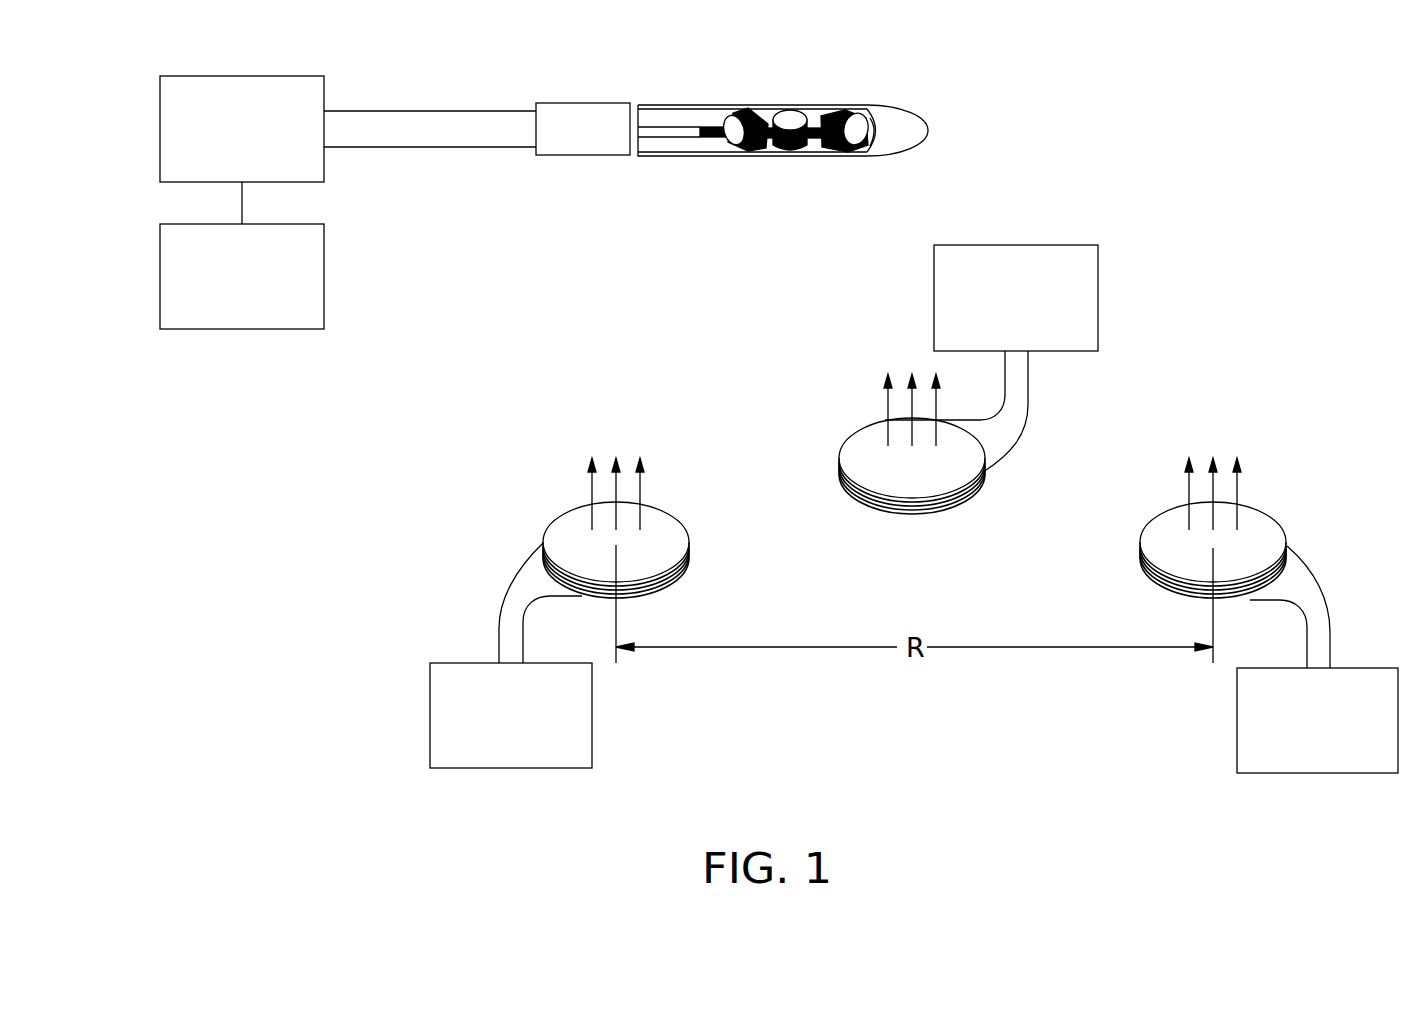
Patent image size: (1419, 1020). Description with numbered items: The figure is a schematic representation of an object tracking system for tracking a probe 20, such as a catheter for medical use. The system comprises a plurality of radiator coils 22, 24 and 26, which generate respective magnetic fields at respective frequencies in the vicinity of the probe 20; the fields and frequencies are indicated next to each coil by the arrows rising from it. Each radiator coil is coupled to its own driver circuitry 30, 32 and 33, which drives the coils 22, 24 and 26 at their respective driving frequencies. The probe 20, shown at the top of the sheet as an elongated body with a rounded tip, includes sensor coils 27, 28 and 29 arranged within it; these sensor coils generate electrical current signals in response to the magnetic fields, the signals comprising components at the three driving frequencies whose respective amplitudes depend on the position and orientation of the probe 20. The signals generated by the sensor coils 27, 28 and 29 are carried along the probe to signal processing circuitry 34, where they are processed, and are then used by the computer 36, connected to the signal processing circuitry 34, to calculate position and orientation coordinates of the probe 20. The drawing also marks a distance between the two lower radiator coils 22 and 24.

The probe 20 is at (912, 150).
The radiator coil 22 is at (1147, 582).
The radiator coil 24 is at (682, 578).
The radiator coil 26 is at (858, 508).
The sensor coil 27 is at (749, 152).
The sensor coil 28 is at (803, 152).
The sensor coil 29 is at (855, 152).
The driver circuitry 30 is at (1237, 768).
The driver circuitry 32 is at (430, 746).
The driver circuitry 33 is at (1098, 277).
The signal processing circuitry 34 is at (160, 176).
The computer 36 is at (160, 316).